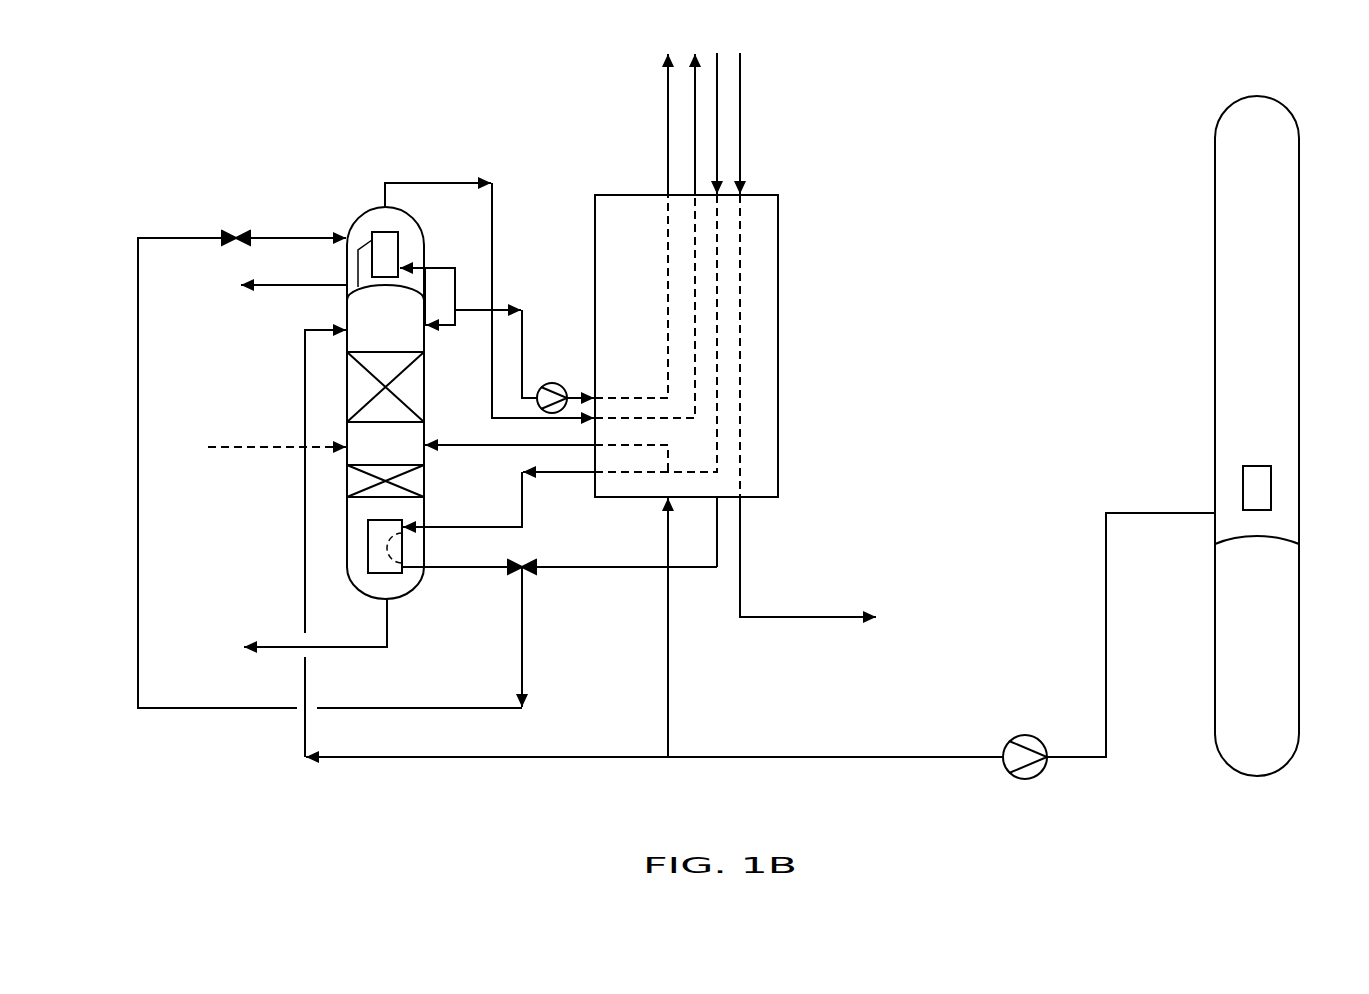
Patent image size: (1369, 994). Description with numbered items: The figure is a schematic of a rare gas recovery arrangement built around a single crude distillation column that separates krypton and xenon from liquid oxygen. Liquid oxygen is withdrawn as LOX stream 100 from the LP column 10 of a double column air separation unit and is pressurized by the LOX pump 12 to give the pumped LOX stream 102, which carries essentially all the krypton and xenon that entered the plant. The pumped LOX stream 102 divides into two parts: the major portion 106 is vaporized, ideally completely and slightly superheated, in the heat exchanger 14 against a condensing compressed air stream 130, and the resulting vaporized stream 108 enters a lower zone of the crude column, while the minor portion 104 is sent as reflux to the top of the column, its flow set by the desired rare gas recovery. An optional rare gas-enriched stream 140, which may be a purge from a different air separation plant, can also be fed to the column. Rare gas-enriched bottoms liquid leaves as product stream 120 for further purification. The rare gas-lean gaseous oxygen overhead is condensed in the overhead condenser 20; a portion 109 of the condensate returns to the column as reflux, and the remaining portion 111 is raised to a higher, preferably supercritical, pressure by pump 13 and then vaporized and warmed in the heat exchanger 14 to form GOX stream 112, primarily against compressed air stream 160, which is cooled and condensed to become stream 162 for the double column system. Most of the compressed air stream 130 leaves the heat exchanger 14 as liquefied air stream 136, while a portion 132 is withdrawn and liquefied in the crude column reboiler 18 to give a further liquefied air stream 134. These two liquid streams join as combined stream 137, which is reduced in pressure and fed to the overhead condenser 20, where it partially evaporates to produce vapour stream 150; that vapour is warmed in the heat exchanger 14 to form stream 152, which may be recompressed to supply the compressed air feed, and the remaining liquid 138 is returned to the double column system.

The LP column 10 is at (1300, 282).
The LOX pump 12 is at (1022, 735).
The pump 13 is at (547, 387).
The heat exchanger 14 is at (790, 275).
The crude column reboiler 18 is at (392, 573).
The overhead condenser 20 is at (412, 240).
The LOX stream 100 is at (1106, 630).
The pumped LOX stream 102 is at (897, 757).
The minor portion 104 is at (540, 757).
The major portion 106 is at (672, 718).
The vaporized stream 108 is at (500, 446).
The portion of resulting liquid 109 is at (444, 327).
The remaining portion 111 is at (480, 312).
The GOX stream 112 is at (665, 130).
The product stream 120 is at (332, 650).
The compressed air stream 130 is at (720, 77).
The portion of compressed air stream 132 is at (523, 505).
The further stream of liquified air 134 is at (452, 565).
The stream of liquefied air 136 is at (718, 550).
The combined stream 137 is at (523, 635).
The remaining liquid 138 is at (298, 287).
The rare gas-enriched stream 140 is at (275, 446).
The vapour stream 150 is at (448, 183).
The warmed vapour stream 152 is at (693, 102).
The compressed air stream 160 is at (740, 97).
The cooled air stream 162 is at (790, 617).